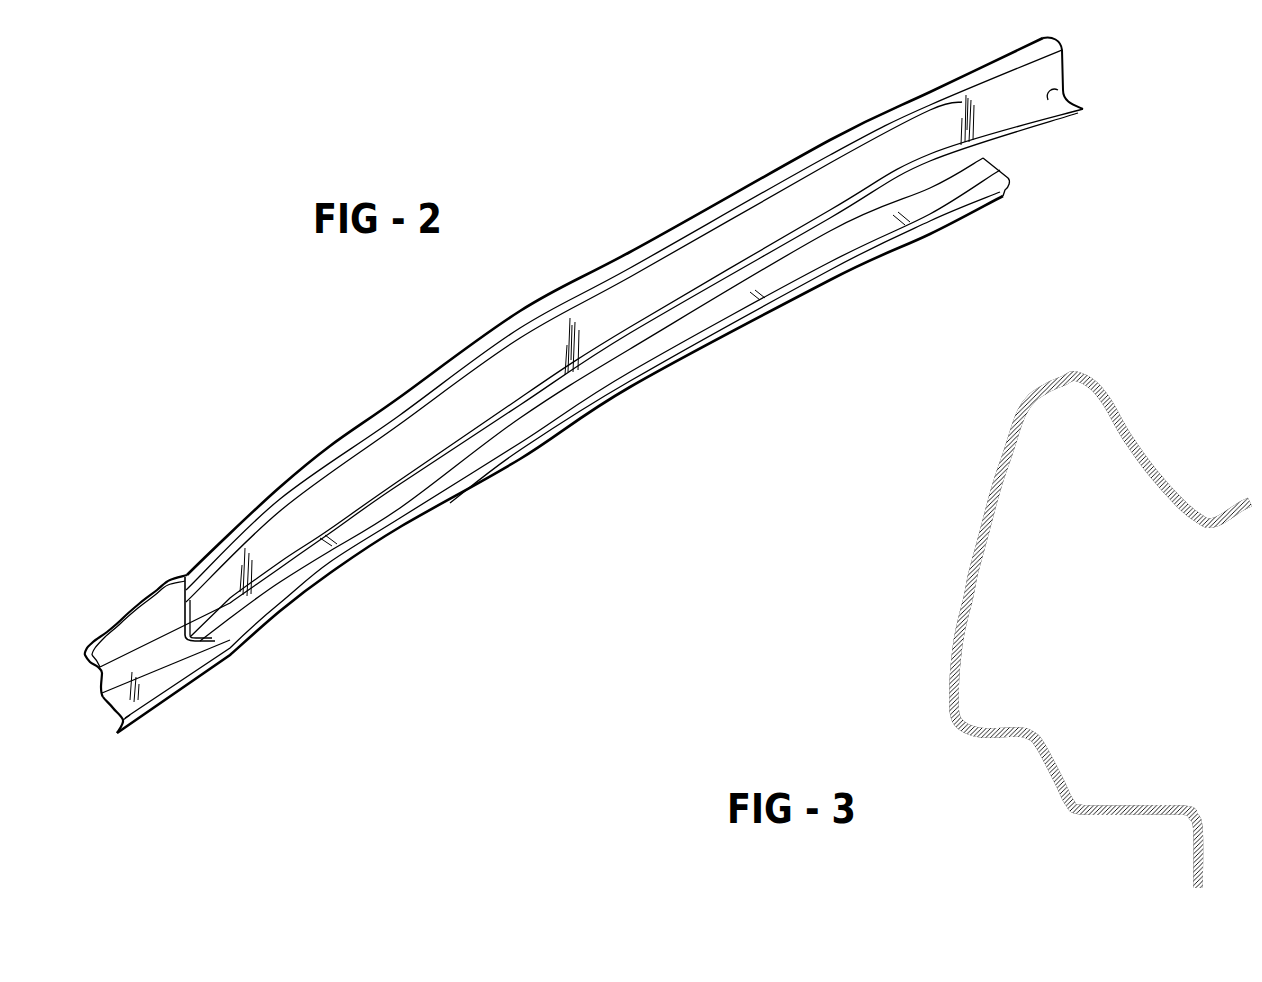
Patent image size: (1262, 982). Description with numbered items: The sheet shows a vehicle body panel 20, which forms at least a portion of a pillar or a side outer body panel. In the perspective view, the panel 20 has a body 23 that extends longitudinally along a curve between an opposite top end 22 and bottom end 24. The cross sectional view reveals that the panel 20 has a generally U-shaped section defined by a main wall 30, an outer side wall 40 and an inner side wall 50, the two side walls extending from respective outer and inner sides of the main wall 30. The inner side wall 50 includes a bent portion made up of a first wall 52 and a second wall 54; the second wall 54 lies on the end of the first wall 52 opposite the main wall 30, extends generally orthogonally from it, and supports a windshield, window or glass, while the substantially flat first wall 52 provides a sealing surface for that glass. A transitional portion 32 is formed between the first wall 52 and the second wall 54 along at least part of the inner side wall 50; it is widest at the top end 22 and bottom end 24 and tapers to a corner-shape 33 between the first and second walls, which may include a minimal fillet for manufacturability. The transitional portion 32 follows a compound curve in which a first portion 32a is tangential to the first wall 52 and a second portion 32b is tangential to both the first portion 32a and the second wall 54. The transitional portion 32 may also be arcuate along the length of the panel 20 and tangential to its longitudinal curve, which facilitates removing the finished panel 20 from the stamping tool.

In FIG. 2, the panel 20 is at (601, 197).
In FIG. 3, the panel 20 is at (900, 635).
In FIG. 2, the top end 22 is at (1060, 43).
In FIG. 2, the body 23 is at (682, 228).
In FIG. 2, the bottom end 24 is at (83, 650).
In FIG. 2, the main wall 30 is at (117, 603).
In FIG. 3, the main wall 30 is at (978, 530).
In FIG. 2, the transitional portion 32 is at (1062, 93).
In FIG. 3, the transitional portion 32 is at (1207, 520).
In FIG. 3, the first portion 32a is at (1197, 517).
In FIG. 3, the second portion 32b is at (1228, 527).
In FIG. 2, the corner-shape 33 is at (620, 388).
In FIG. 2, the outer side wall 40 is at (100, 690).
In FIG. 3, the outer side wall 40 is at (1068, 810).
In FIG. 3, the inner side wall 50 is at (1080, 374).
In FIG. 2, the first wall 52 is at (207, 583).
In FIG. 3, the first wall 52 is at (1137, 445).
In FIG. 2, the second wall 54 is at (380, 495).
In FIG. 3, the second wall 54 is at (1247, 512).